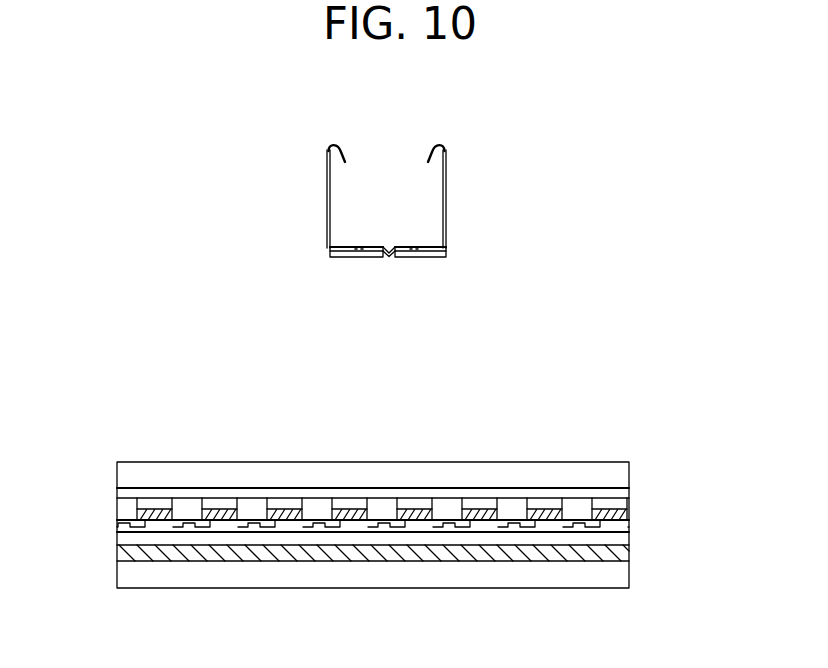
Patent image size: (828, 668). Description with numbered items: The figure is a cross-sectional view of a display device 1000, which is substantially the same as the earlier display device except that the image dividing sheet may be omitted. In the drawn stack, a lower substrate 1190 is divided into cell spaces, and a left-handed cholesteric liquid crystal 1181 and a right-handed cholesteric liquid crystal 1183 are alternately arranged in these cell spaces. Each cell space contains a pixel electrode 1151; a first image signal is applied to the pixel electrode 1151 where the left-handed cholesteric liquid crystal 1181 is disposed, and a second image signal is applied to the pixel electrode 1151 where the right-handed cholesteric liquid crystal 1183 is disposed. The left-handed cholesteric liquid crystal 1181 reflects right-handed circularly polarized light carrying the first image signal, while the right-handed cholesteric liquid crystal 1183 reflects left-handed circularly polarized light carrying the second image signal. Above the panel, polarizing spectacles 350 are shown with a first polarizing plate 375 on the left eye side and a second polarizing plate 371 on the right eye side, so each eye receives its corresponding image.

The polarizing spectacles 350 is at (325, 228).
The second polarizing plate 371 is at (343, 258).
The first polarizing plate 375 is at (411, 258).
The display device 1000 is at (409, 490).
The lower substrate 1190 is at (409, 525).
The left-handed cholesteric liquid crystal 1181 is at (413, 505).
The right-handed cholesteric liquid crystal 1183 is at (480, 505).
The pixel electrode 1151 is at (413, 520).